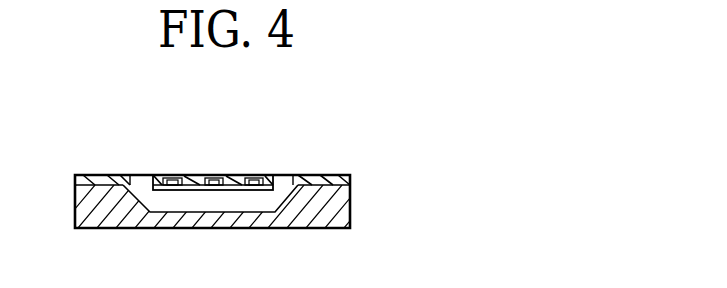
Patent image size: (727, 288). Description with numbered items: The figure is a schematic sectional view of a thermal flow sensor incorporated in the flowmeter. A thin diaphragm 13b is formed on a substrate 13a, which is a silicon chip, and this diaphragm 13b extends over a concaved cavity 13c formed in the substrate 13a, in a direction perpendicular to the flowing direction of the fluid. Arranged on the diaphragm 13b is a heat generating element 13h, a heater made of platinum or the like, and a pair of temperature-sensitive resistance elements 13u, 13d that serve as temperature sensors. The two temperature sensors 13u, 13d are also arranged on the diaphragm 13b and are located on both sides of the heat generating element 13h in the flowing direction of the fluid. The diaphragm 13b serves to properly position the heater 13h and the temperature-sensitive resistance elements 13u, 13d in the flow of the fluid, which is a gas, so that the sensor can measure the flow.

The substrate (silicon chip) 13a is at (337, 205).
The thin diaphragm 13b is at (182, 190).
The concaved cavity 13c is at (245, 203).
The temperature-sensitive resistance element (temperature sensor) 13u is at (171, 178).
The heat generating element (heater) 13h is at (213, 178).
The temperature-sensitive resistance element (temperature sensor) 13d is at (251, 178).